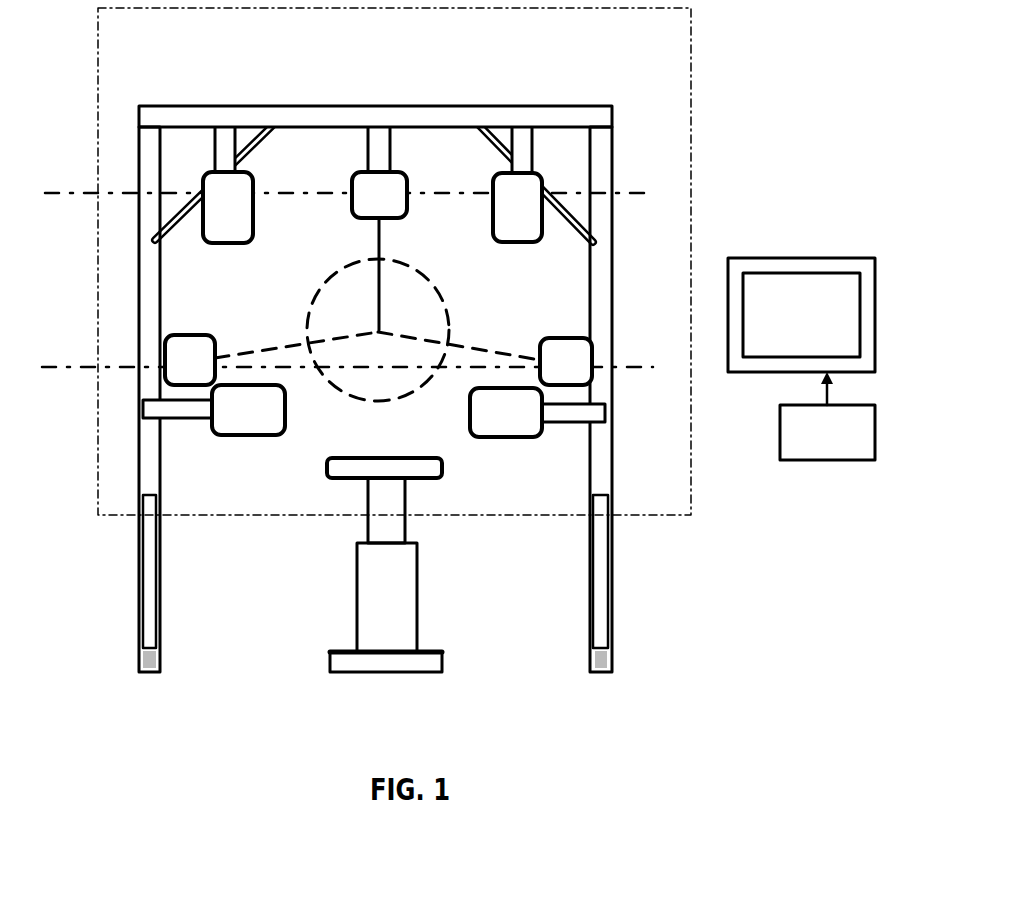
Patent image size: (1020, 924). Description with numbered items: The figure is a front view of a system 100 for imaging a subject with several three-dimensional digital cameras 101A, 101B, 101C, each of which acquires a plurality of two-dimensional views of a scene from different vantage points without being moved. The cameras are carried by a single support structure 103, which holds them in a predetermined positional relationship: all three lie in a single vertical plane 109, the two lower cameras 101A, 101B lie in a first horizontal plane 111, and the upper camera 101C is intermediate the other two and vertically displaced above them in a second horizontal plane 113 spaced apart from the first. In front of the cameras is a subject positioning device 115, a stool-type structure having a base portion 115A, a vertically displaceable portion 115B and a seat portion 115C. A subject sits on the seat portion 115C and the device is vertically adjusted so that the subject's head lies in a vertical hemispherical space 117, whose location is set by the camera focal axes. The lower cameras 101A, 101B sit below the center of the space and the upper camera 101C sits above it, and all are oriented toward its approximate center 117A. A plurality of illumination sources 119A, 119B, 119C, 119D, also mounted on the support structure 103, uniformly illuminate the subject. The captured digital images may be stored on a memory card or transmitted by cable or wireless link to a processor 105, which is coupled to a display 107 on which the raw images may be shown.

The system 100 is at (188, 773).
The three-dimensional digital camera 101A is at (200, 348).
The three-dimensional digital camera 101B is at (572, 340).
The three-dimensional digital camera 101C is at (353, 197).
The support structure 103 is at (698, 589).
The processor 105 is at (823, 447).
The display 107 is at (825, 262).
The vertical plane 109 is at (295, 517).
The first horizontal plane 111 is at (82, 367).
The second horizontal plane 113 is at (73, 198).
The subject positioning device 115 is at (397, 596).
The base portion 115A is at (335, 653).
The vertically displaceable portion 115B is at (388, 495).
The seat portion 115C is at (327, 468).
The vertical hemispherical space 117 is at (338, 303).
The center 117A is at (378, 330).
The illumination source 119A is at (277, 429).
The illumination source 119B is at (527, 428).
The illumination source 119C is at (223, 245).
The illumination source 119D is at (510, 222).